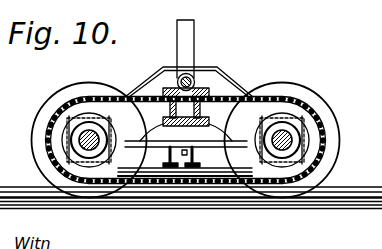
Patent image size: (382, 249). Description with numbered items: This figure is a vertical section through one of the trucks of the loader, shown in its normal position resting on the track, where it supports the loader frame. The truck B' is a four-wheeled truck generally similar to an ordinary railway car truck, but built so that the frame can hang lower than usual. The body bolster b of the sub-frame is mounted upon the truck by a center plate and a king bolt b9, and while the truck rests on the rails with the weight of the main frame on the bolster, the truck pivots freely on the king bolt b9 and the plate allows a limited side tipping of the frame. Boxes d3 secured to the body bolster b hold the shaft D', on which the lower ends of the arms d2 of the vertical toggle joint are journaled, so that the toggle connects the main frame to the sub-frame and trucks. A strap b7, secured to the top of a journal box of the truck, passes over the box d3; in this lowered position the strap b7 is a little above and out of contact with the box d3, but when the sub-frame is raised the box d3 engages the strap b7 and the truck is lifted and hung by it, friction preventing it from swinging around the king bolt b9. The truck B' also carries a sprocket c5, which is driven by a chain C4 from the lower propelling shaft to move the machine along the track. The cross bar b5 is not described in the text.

The truck B' is at (174, 135).
The sprocket c5 is at (347, 131).
The body bolster b is at (243, 96).
The chain C4 is at (230, 184).
The strap b7 is at (138, 86).
The arm d2 is at (177, 41).
The shaft D' is at (204, 62).
The box d3 is at (204, 90).
The king bolt b9 is at (180, 113).
The cross bar b5 is at (200, 141).